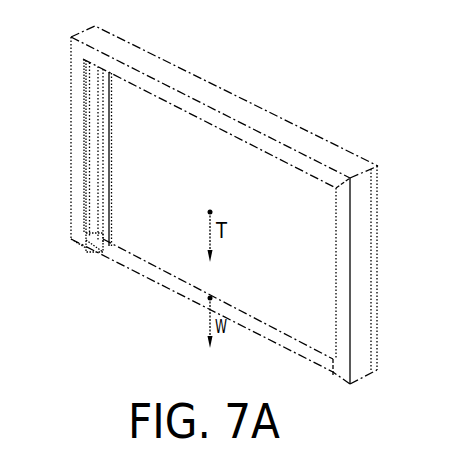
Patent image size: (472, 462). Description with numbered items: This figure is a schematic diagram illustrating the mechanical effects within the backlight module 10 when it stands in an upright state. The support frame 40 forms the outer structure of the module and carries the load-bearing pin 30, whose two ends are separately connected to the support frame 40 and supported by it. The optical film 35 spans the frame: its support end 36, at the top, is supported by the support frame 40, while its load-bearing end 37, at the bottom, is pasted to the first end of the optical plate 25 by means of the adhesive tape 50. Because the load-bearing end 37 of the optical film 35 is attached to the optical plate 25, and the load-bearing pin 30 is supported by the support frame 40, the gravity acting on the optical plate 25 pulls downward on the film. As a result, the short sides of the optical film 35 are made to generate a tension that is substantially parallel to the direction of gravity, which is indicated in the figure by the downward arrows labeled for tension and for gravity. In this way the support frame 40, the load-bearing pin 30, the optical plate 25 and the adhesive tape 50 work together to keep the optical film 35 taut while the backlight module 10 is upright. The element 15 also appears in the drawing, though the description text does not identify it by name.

The backlight module 10 is at (349, 72).
The outer frame 15 is at (378, 225).
The optical plate 25 is at (107, 149).
The load-bearing pin 30 is at (100, 246).
The optical film 35 is at (310, 260).
The support end 36 is at (229, 108).
The load-bearing end 37 is at (168, 302).
The support frame 40 is at (344, 167).
The adhesive tape 50 is at (102, 247).